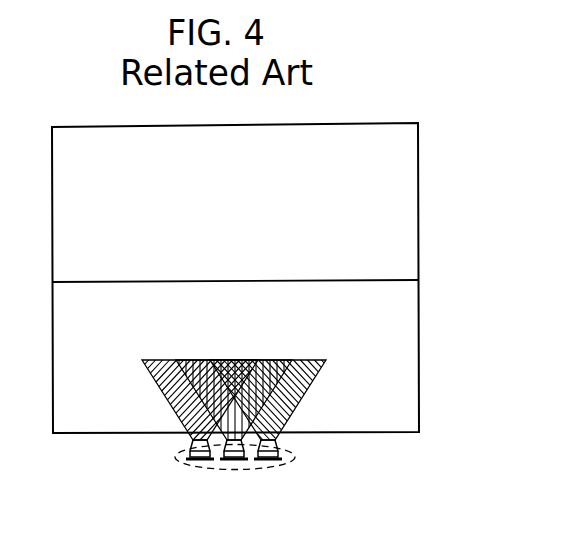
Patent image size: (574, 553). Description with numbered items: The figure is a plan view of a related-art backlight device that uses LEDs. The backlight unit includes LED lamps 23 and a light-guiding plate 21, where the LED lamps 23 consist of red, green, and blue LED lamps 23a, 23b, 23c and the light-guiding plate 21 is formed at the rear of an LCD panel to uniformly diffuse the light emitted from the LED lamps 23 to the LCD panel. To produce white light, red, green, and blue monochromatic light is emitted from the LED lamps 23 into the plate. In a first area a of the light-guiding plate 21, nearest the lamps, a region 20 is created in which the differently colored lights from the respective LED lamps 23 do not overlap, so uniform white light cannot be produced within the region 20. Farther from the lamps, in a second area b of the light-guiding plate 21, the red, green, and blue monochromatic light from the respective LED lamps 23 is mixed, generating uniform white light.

The light-guiding plate 21 is at (467, 177).
The second area b is at (412, 223).
The first area a is at (412, 358).
The region 20 is at (169, 443).
The LED lamps 23 is at (298, 454).
The red LED lamp 23a is at (200, 471).
The green LED lamp 23b is at (235, 471).
The blue LED lamp 23c is at (270, 471).